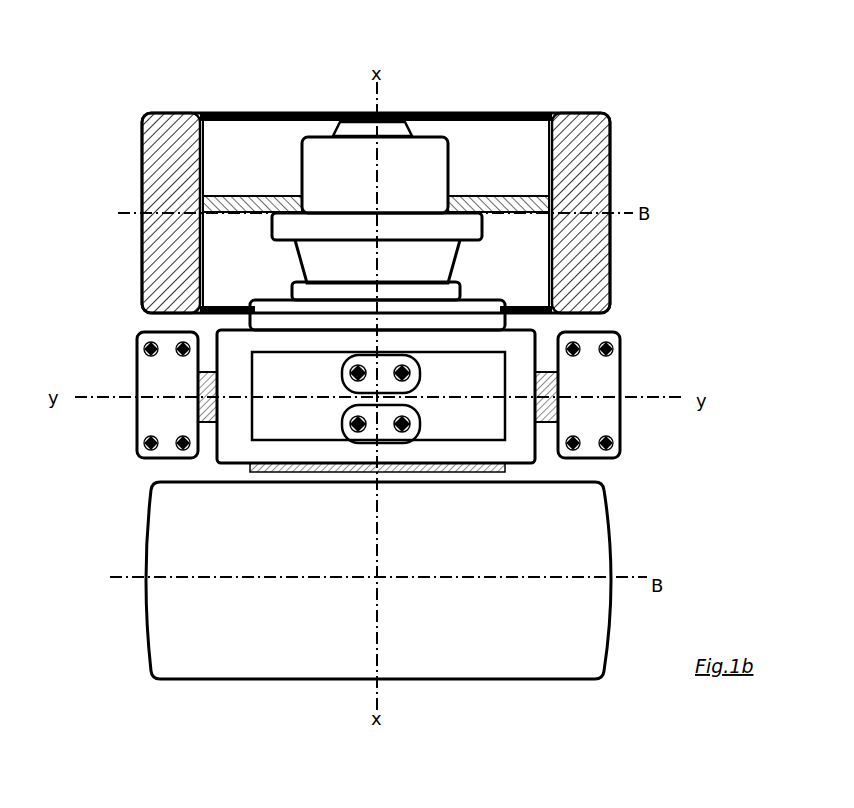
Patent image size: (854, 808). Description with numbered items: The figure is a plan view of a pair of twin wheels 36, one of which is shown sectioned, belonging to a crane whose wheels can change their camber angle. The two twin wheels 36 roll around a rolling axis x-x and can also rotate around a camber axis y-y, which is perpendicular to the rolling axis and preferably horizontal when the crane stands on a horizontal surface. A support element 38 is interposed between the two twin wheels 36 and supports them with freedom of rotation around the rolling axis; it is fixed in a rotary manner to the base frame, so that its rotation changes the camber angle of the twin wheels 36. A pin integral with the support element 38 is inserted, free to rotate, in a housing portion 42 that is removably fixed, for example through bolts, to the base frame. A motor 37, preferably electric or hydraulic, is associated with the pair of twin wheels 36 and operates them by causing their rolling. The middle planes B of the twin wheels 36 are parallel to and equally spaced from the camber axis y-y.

The twin wheels 36 is at (72, 174).
The motor 37 is at (377, 226).
The support element 38 is at (378, 401).
The housing portion 42 is at (378, 395).